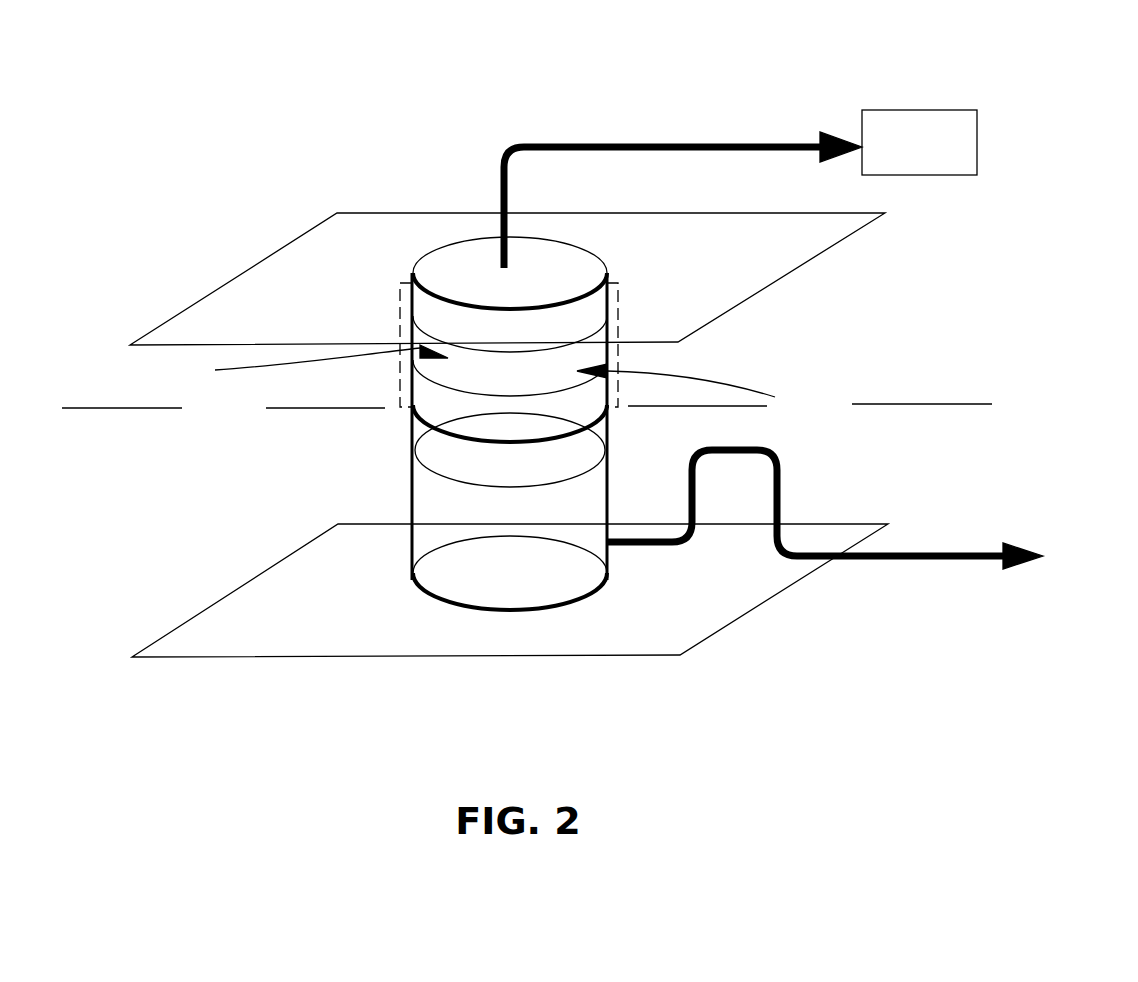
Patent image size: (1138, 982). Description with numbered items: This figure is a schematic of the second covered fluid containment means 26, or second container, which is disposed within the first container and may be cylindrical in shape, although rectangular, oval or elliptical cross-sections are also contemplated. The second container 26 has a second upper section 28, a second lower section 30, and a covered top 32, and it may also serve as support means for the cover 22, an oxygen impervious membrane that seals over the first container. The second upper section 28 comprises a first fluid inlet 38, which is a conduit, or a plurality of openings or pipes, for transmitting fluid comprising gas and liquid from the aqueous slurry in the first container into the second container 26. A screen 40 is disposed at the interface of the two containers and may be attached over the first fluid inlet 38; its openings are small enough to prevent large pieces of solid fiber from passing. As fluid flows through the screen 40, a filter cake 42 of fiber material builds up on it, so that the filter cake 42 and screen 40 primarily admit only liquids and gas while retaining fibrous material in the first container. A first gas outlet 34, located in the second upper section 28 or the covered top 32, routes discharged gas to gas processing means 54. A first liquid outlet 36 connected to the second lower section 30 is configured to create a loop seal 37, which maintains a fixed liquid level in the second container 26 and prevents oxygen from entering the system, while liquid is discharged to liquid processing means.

The cover 22 is at (780, 270).
The second covered fluid containment means 26 is at (365, 480).
The second upper section 28 is at (678, 342).
The second lower section 30 is at (613, 497).
The covered top 32 is at (548, 272).
The first gas outlet 34 is at (564, 133).
The first liquid outlet 36 is at (872, 571).
The loop seal 37 is at (793, 478).
The first fluid inlet 38 is at (600, 357).
The screen 40 is at (507, 514).
The filter cake 42 is at (390, 312).
The gas processing means 54 is at (986, 131).